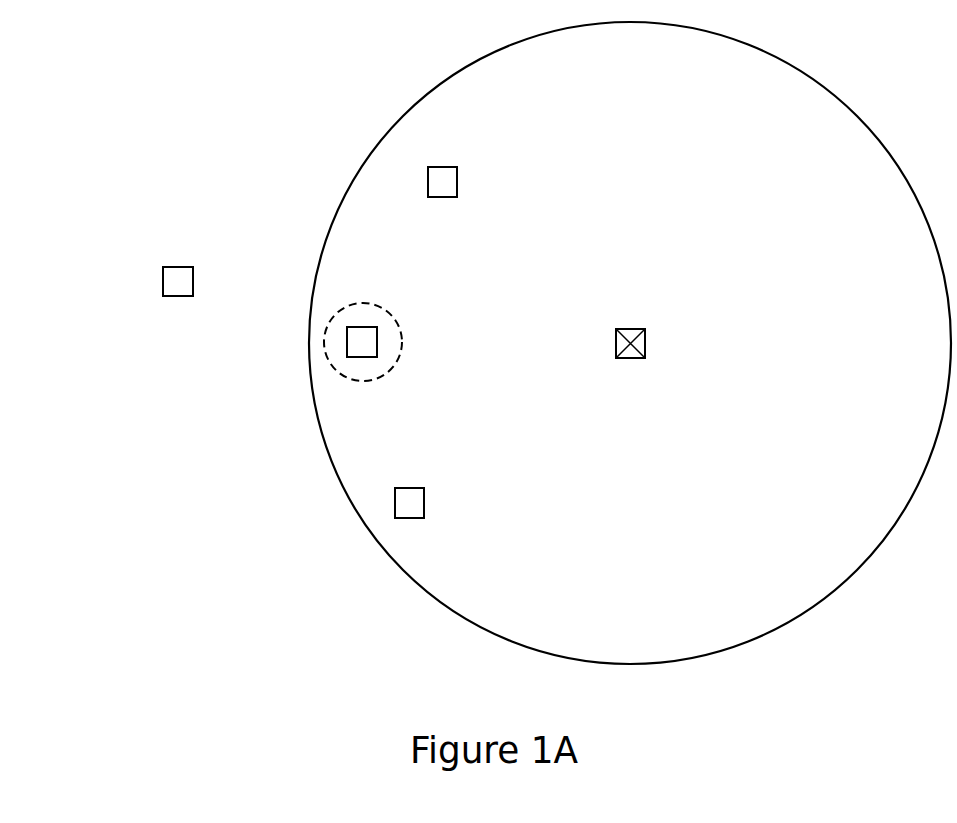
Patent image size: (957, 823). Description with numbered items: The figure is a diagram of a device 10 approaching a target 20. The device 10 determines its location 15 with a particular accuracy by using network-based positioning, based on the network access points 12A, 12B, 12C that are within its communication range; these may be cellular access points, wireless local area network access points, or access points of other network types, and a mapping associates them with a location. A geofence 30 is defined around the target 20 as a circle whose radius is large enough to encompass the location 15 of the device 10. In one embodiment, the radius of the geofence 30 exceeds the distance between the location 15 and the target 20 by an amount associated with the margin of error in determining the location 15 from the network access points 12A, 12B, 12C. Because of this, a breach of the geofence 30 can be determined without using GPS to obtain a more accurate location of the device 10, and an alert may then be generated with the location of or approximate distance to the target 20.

The geofence 30 is at (448, 77).
The network access point 12A is at (445, 167).
The network access point 12B is at (182, 267).
The network access point 12C is at (415, 488).
The device 10 is at (377, 328).
The location 15 is at (382, 374).
The target 20 is at (630, 329).